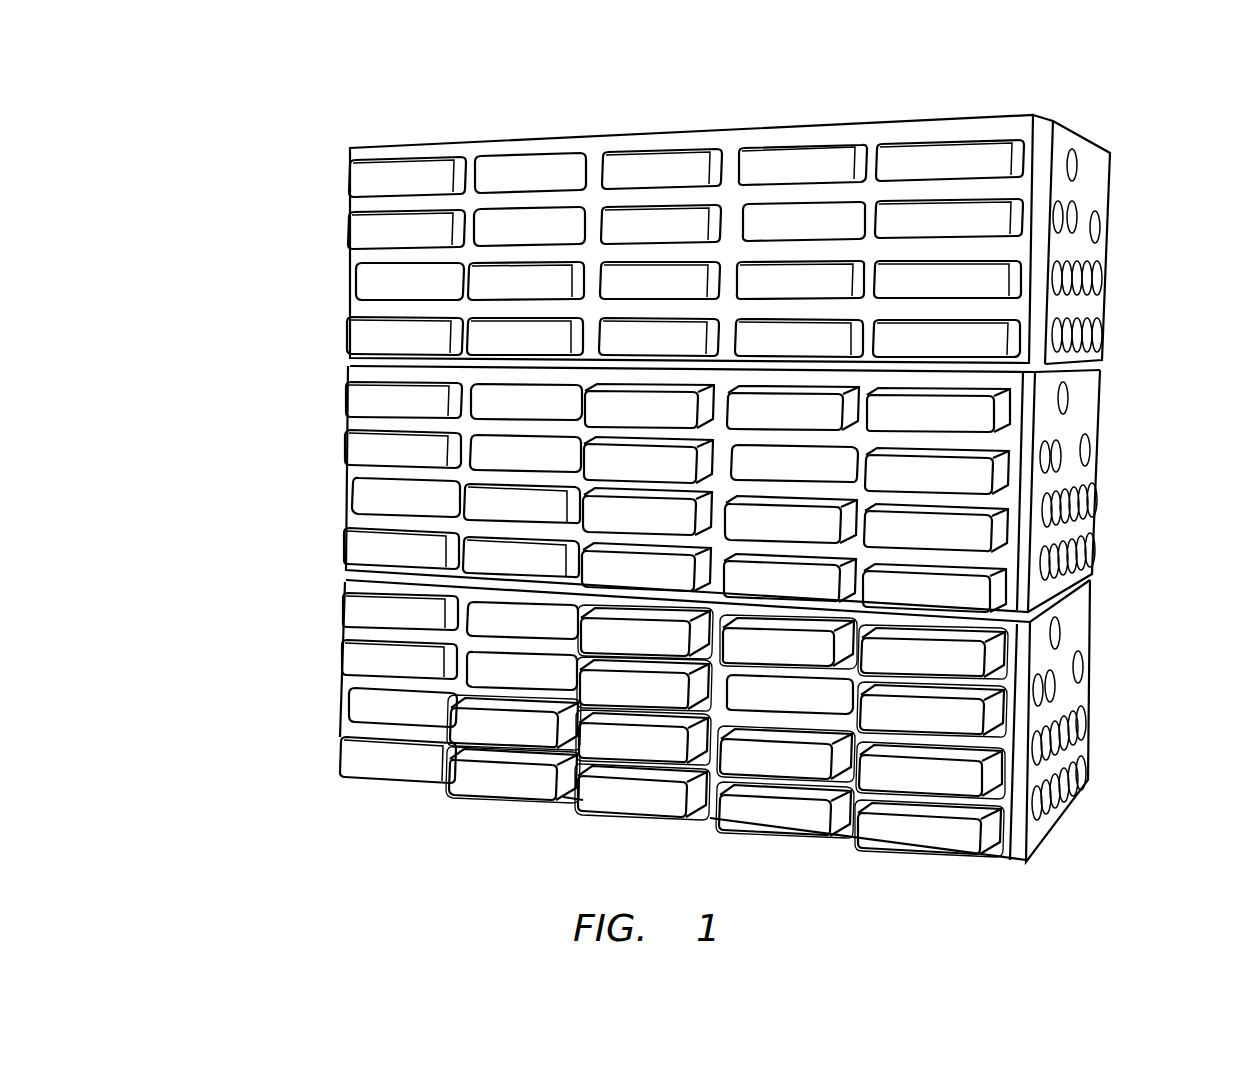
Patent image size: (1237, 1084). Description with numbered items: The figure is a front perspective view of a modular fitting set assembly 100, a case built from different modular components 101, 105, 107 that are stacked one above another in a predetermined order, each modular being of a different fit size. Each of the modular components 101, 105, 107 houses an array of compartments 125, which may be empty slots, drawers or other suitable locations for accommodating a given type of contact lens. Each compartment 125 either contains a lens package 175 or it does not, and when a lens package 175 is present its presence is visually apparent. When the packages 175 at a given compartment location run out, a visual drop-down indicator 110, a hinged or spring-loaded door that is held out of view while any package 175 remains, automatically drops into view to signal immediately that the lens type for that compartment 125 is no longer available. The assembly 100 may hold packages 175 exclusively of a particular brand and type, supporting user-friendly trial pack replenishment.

The modular fitting set assembly 100 is at (276, 95).
The modular component 101 is at (1128, 241).
The modular component 105 is at (1117, 431).
The modular component 107 is at (1103, 617).
The visual drop-down indicator 110 is at (491, 222).
The compartment 125 is at (576, 160).
The lens package 175 is at (779, 148).